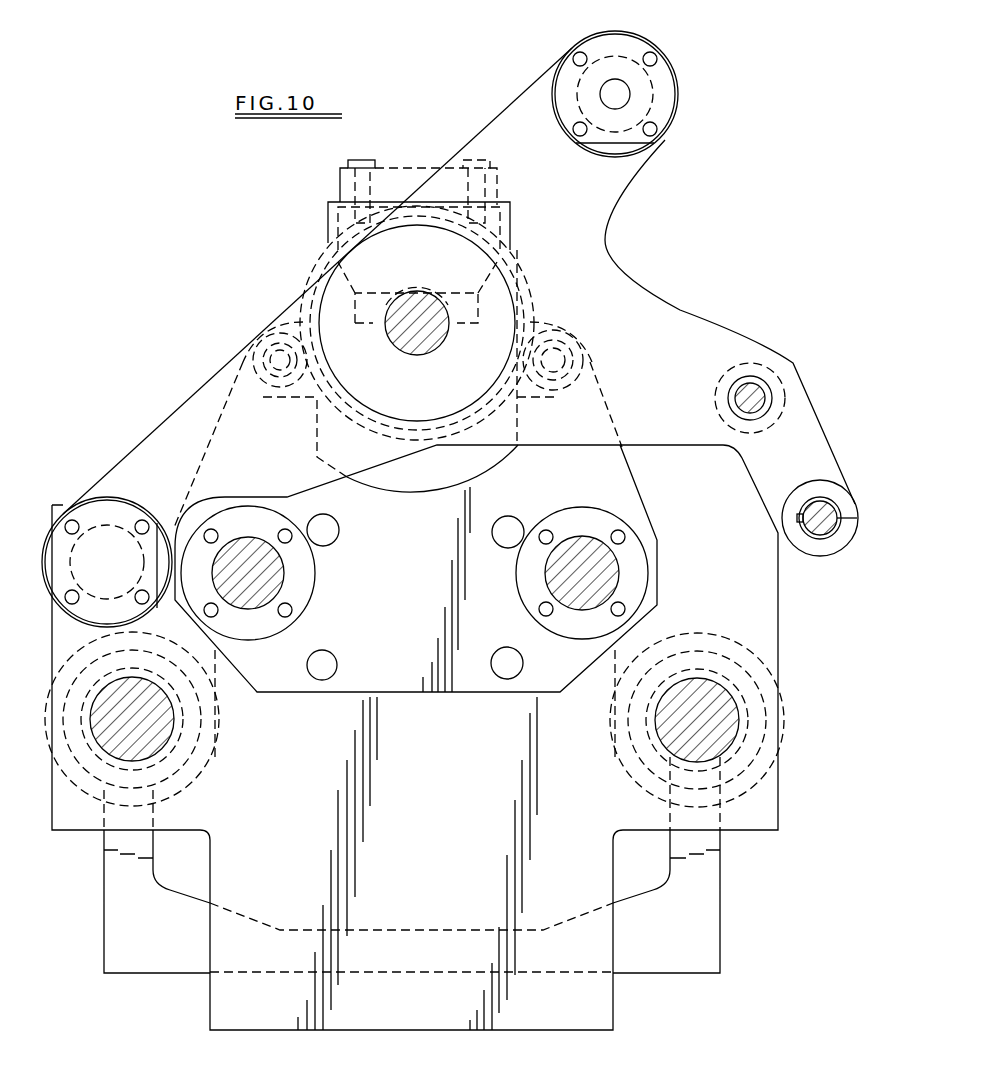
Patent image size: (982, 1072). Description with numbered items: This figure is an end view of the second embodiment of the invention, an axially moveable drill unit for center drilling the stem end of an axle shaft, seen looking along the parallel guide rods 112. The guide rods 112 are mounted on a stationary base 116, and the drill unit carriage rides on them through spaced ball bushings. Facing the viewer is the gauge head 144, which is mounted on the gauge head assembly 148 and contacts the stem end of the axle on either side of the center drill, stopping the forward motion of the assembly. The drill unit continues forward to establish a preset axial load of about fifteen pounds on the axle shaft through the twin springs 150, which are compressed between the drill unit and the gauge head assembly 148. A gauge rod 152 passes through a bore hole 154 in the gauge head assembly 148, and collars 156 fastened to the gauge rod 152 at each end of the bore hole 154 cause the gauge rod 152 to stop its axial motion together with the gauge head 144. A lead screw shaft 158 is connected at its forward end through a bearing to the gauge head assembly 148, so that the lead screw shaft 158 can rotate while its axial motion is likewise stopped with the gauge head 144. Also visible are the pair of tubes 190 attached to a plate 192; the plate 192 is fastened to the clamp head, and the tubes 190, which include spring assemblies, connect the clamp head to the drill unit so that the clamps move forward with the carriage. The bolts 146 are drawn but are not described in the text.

The guide rods 112 is at (717, 733).
The stationary base 116 is at (708, 901).
The gauge head 144 is at (378, 318).
The mounting bolts 146 is at (365, 158).
The gauge head assembly 148 is at (603, 267).
The twin springs 150 is at (668, 91).
The gauge rod 152 is at (820, 533).
The bore hole 154 is at (817, 498).
The collars 156 is at (838, 495).
The lead screw shaft 158 is at (763, 388).
The tubes 190 is at (300, 597).
The plate 192 is at (418, 683).